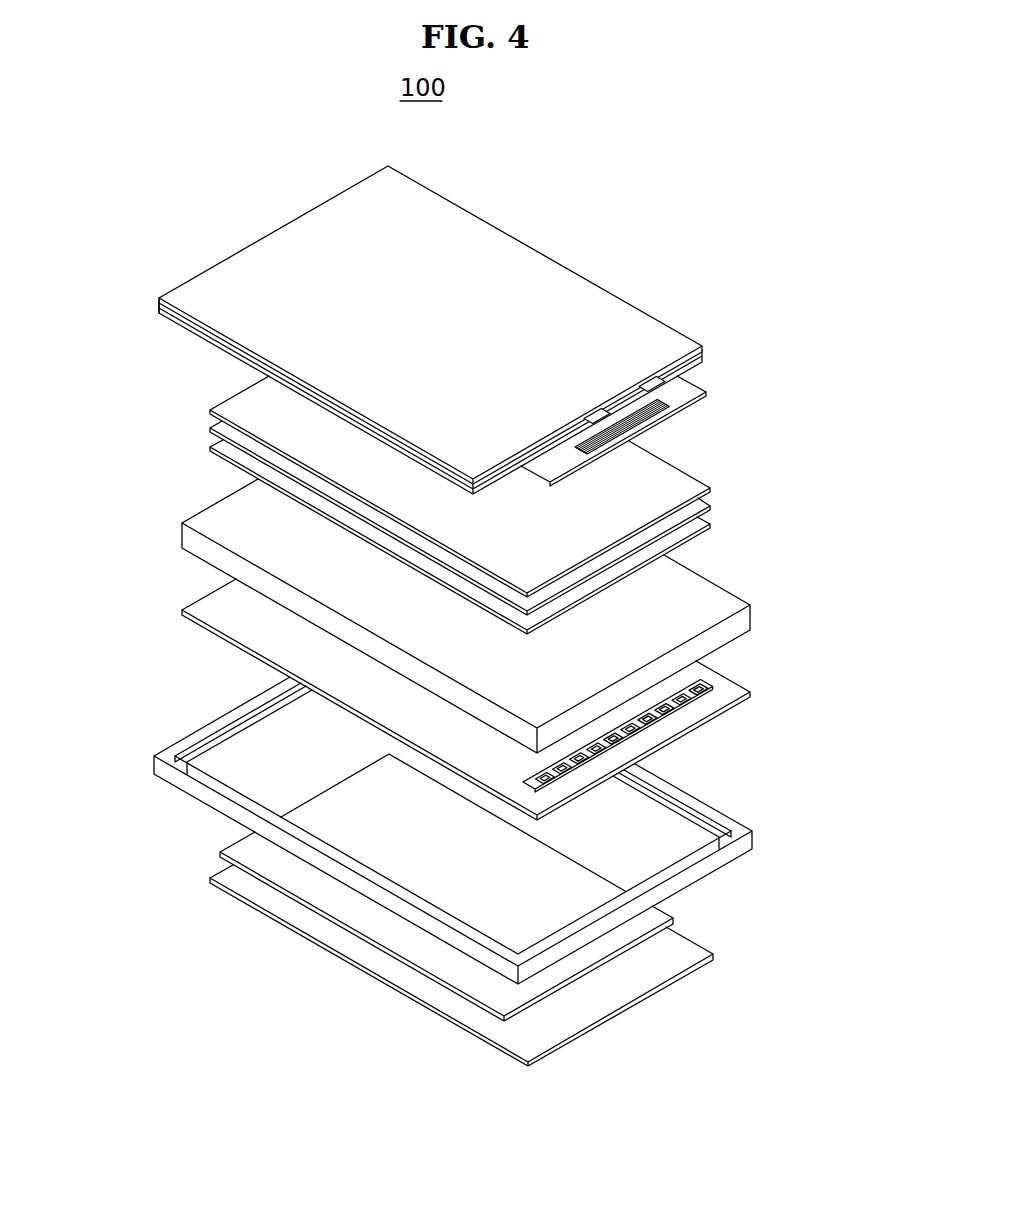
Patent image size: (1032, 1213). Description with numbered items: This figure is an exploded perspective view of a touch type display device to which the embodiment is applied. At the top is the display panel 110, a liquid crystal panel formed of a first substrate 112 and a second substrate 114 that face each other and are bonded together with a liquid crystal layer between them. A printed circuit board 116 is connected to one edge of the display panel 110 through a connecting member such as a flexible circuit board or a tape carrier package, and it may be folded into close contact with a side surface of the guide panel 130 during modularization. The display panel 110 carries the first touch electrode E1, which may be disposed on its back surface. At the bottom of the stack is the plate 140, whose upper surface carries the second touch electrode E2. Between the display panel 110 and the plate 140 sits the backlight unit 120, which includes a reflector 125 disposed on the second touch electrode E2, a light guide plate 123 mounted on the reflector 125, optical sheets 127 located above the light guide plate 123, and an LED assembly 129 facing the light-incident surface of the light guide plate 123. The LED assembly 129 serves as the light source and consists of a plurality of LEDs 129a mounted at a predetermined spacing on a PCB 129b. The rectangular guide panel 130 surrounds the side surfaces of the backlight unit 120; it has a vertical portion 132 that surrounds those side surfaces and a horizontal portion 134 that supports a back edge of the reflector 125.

The display panel 110 is at (532, 330).
The first substrate 112 is at (708, 352).
The second substrate 114 is at (650, 326).
The printed circuit board 116 is at (700, 390).
The backlight unit 120 is at (560, 598).
The light guide plate 123 is at (753, 605).
The reflector 125 is at (751, 692).
The optical sheets 127 is at (727, 490).
The LED assembly 129 is at (700, 736).
The LEDs 129a is at (693, 700).
The PCB 129b is at (690, 708).
The guide panel 130 is at (385, 830).
The vertical portion 132 is at (153, 757).
The horizontal portion 134 is at (178, 768).
The plate 140 is at (713, 955).
The first touch electrode E1 is at (162, 316).
The second touch electrode E2 is at (240, 848).